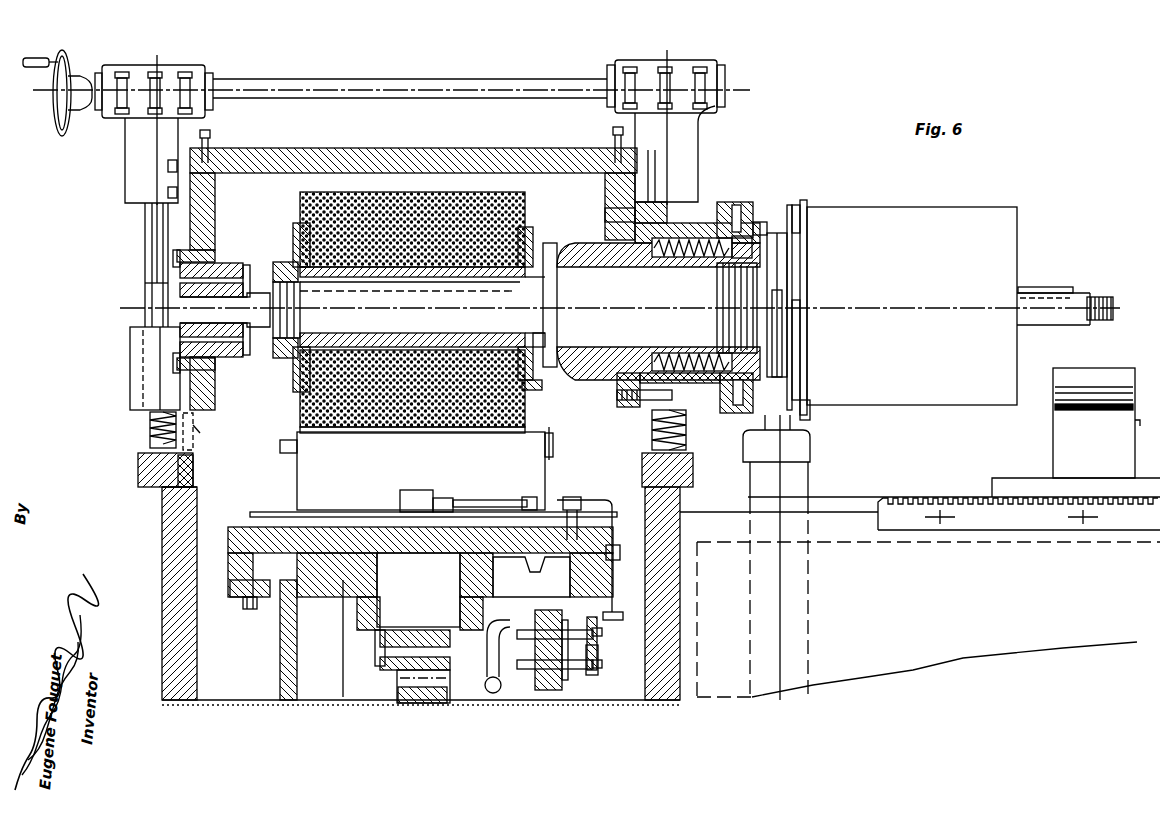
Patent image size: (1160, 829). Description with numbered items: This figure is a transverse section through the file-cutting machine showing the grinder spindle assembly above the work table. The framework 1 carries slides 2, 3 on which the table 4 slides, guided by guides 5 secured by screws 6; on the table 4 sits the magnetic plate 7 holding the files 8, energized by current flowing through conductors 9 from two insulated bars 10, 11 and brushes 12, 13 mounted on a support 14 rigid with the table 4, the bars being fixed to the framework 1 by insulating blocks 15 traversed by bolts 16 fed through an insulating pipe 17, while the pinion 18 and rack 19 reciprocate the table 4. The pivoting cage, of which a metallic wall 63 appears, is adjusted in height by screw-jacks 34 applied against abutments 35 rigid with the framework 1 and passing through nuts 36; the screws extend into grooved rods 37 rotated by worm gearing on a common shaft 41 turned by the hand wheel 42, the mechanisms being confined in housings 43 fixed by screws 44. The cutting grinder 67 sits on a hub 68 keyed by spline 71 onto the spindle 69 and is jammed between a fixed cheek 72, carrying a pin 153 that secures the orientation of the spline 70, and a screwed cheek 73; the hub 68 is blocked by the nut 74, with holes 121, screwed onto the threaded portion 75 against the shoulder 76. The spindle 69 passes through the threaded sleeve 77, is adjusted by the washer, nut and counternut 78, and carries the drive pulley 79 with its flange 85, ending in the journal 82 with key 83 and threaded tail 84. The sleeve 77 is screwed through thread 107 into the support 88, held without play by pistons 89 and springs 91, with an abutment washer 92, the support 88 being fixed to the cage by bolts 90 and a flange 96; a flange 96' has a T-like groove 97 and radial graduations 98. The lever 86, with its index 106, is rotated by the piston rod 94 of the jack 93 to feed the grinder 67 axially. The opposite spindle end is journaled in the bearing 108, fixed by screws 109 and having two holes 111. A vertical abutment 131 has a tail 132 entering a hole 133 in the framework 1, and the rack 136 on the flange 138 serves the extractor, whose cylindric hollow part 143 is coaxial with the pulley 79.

The framework 1 is at (170, 585).
The slide 2 is at (295, 590).
The slide 3 is at (500, 583).
The table 4 is at (415, 510).
The guides 5 is at (255, 612).
The screws 6 is at (240, 600).
The magnetic plate 7 is at (416, 468).
The files 8 is at (440, 433).
The conductors 9 is at (495, 500).
The insulated bar 10 is at (575, 672).
The insulated bar 11 is at (600, 640).
The brush 12 is at (600, 668).
The brush 13 is at (595, 630).
The support 14 is at (600, 620).
The insulating blocks 15 is at (537, 675).
The bolts 16 is at (540, 628).
The insulating pipe 17 is at (486, 685).
The pinion 18 is at (410, 692).
The rack 19 is at (375, 660).
The screw-jacks 34 is at (150, 425).
The abutments 35 is at (148, 478).
The nuts 36 is at (135, 383).
The grooved rods 37 is at (145, 232).
The common shaft 41 is at (249, 82).
The hand wheel 42 is at (58, 118).
The housings 43 is at (172, 76).
The screws 44 is at (212, 143).
The metallic wall 63 is at (195, 410).
The cutting grinder 67 is at (432, 196).
The hub 68 is at (370, 360).
The spindle 69 is at (362, 307).
The spline 70 is at (558, 250).
The spline 71 is at (398, 290).
The fixed cheek 72 is at (537, 230).
The screwed cheek 73 is at (300, 390).
The nut 74 is at (298, 225).
The threaded portion 75 is at (295, 320).
The shoulder 76 is at (548, 340).
The threaded sleeve 77 is at (645, 275).
The washer, nut and counternut 78 is at (810, 212).
The drive pulley 79 is at (912, 306).
The journal 82 is at (1045, 312).
The key 83 is at (1050, 286).
The threaded tail 84 is at (1106, 294).
The flange 85 is at (812, 415).
The lever 86 is at (777, 368).
The support 88 is at (620, 392).
The pistons 89 is at (762, 237).
The bolts 90 is at (612, 215).
The springs 91 is at (680, 352).
The abutment washer 92 is at (800, 218).
The jack 93 is at (790, 481).
The piston rod 94 is at (798, 393).
The flange 96 is at (703, 199).
The flange 96' is at (768, 188).
The T-like groove 97 is at (735, 205).
The radial graduations 98 is at (757, 228).
The index 106 is at (775, 313).
The thread 107 is at (737, 280).
The bearing 108 is at (215, 268).
The screws 109 is at (178, 360).
The holes 111 is at (247, 270).
The holes 121 is at (283, 262).
The vertical abutment 131 is at (200, 433).
The tail 132 is at (192, 462).
The hole 133 is at (182, 488).
The rack 136 is at (1000, 520).
The flange 138 is at (928, 619).
The cylindric hollow part 143 is at (1110, 390).
The pin 153 is at (538, 388).